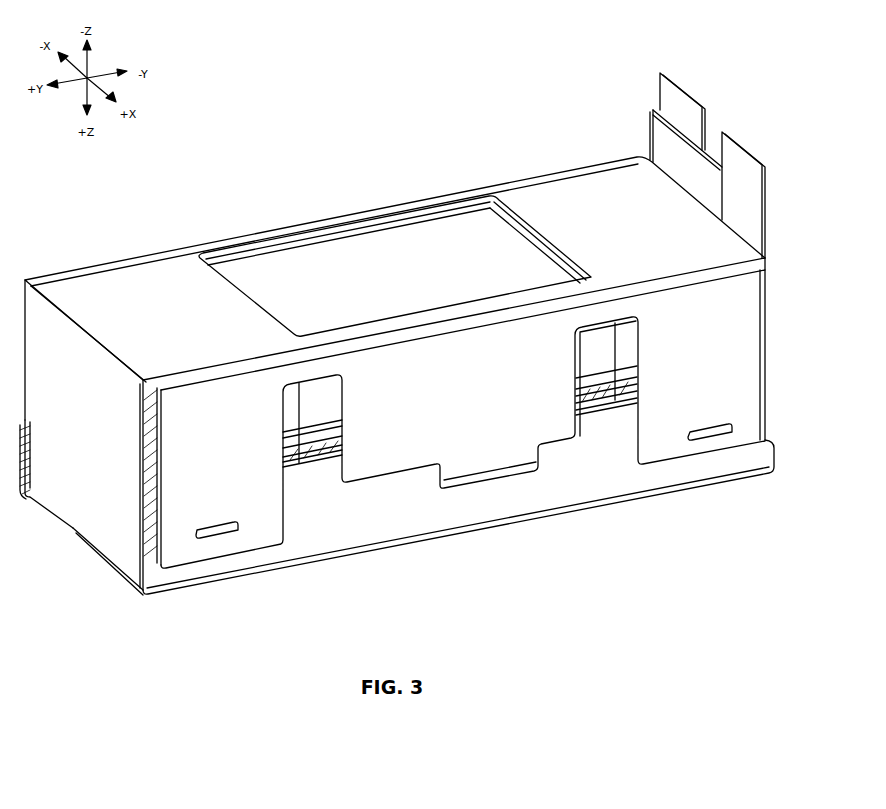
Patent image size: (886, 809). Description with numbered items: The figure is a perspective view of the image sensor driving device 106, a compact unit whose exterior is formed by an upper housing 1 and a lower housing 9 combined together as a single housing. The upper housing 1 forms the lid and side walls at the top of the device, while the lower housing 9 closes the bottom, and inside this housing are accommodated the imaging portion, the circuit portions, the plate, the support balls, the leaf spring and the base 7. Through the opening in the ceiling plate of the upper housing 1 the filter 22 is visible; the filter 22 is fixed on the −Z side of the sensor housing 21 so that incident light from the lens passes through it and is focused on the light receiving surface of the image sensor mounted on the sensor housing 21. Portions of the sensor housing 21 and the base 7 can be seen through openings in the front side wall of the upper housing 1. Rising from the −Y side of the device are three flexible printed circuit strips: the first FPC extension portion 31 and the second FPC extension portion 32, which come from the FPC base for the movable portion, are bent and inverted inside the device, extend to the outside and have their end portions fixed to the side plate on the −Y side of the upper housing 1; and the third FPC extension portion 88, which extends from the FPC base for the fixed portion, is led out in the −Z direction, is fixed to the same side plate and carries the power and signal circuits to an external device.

The upper housing 1 is at (120, 287).
The image sensor driving device 106 is at (306, 141).
The filter 22 is at (432, 240).
The third FPC extension portion 88 is at (663, 150).
The second FPC extension portion 32 is at (680, 103).
The first FPC extension portion 31 is at (743, 172).
The sensor housing 21 is at (593, 362).
The base 7 is at (213, 531).
The lower housing 9 is at (353, 520).